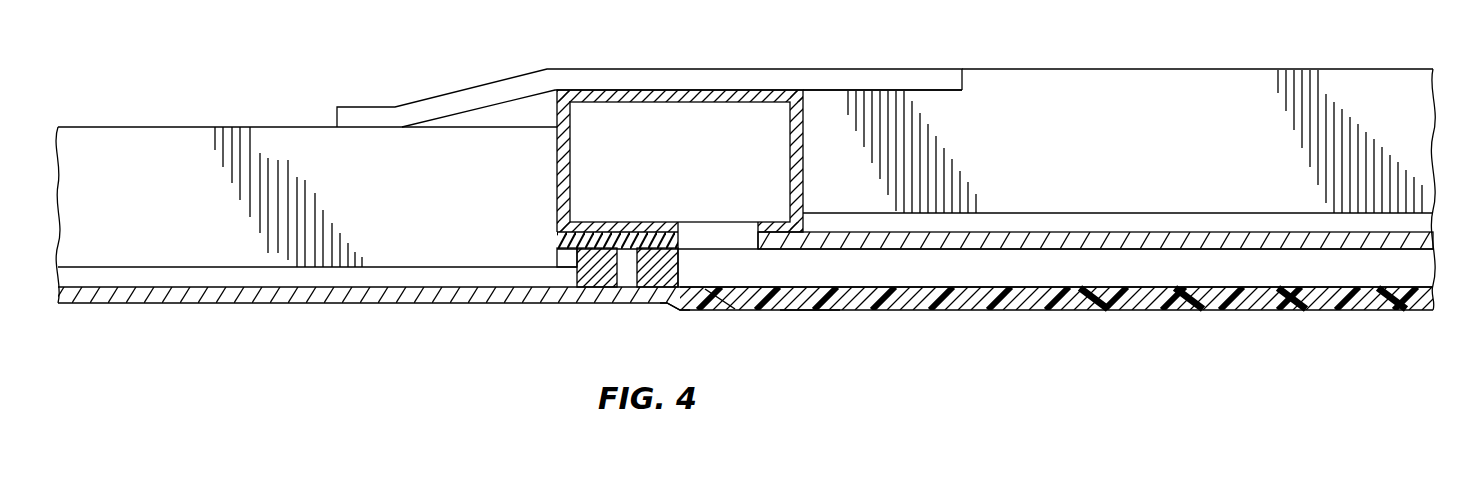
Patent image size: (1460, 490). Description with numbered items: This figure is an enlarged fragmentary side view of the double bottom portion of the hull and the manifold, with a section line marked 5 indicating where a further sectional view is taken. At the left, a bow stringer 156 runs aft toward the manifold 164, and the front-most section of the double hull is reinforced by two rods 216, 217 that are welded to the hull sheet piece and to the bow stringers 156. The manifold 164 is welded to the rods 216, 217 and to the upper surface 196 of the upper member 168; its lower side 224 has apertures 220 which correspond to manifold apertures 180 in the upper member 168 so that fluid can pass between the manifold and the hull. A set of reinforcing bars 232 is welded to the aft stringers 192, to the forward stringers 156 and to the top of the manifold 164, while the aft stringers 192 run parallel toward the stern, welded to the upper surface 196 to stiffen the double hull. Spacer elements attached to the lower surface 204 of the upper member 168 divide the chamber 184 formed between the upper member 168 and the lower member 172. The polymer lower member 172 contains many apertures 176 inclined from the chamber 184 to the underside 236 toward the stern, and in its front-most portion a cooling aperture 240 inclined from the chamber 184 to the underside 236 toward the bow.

The bow stringer 156 is at (383, 201).
The reinforcing bar 232 is at (768, 70).
The manifold 164 is at (693, 155).
The lower side of the manifold 224 is at (637, 222).
The aperture 220 is at (733, 223).
The manifold aperture 180 is at (723, 242).
The rod 216 is at (557, 268).
The rod 217 is at (650, 275).
The aft stringer 192 is at (1147, 148).
The upper surface of the upper member 196 is at (1062, 232).
The upper member 168 is at (1101, 246).
The lower surface of the upper member 204 is at (1178, 248).
The chamber 184 is at (912, 282).
The lower member 172 is at (868, 297).
The aperture 176 is at (1105, 312).
The cooling aperture 240 is at (716, 310).
The underside of the hull 236 is at (807, 310).
The section line 5- 5 is at (993, 18).